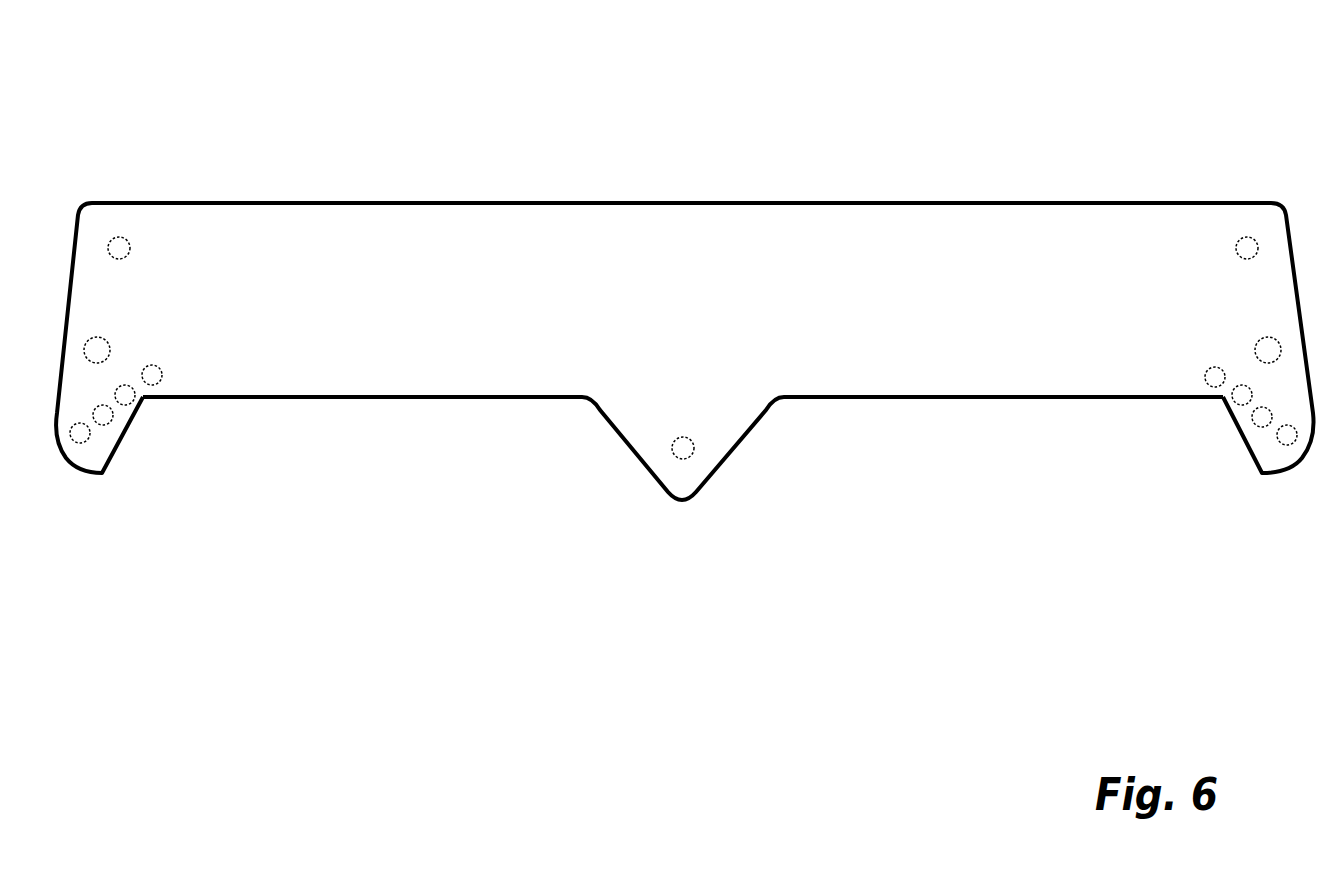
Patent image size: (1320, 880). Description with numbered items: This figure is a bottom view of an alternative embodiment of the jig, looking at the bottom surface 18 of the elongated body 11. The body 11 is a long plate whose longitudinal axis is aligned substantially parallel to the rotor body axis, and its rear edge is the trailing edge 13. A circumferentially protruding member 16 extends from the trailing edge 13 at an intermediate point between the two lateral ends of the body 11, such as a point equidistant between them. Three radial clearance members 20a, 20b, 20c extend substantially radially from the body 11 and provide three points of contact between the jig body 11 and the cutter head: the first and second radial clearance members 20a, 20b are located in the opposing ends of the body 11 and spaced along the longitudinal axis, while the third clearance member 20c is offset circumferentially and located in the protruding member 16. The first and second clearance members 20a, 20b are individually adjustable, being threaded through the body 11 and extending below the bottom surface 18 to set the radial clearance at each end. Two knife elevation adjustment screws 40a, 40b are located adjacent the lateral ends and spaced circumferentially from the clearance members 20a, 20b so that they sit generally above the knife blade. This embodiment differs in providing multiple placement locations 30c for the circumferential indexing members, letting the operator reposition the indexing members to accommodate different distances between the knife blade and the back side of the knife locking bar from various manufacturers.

The elongated body 11 is at (570, 250).
The trailing edge 13 is at (895, 403).
The circumferentially protruding member 16 is at (678, 412).
The bottom surface 18 is at (685, 258).
The first radial clearance member 20a is at (119, 248).
The second radial clearance member 20b is at (1247, 248).
The third radial clearance member 20c is at (683, 448).
The placement locations 30c is at (152, 375).
The knife radial adjustment screw 40a is at (97, 350).
The knife radial adjustment screw 40b is at (1268, 350).